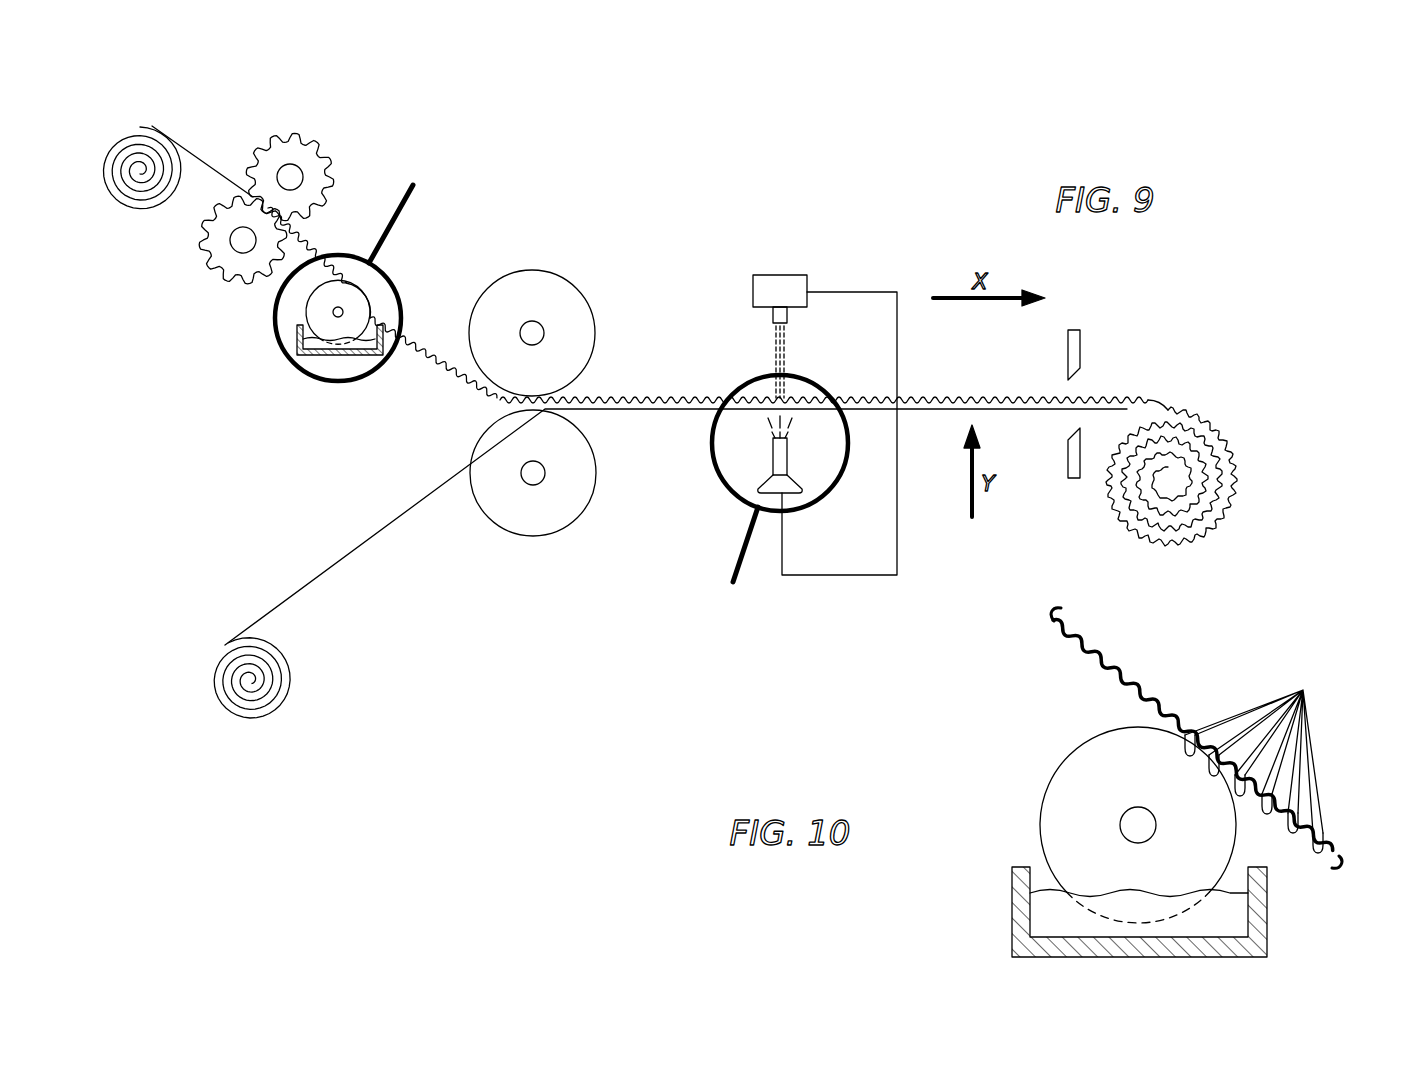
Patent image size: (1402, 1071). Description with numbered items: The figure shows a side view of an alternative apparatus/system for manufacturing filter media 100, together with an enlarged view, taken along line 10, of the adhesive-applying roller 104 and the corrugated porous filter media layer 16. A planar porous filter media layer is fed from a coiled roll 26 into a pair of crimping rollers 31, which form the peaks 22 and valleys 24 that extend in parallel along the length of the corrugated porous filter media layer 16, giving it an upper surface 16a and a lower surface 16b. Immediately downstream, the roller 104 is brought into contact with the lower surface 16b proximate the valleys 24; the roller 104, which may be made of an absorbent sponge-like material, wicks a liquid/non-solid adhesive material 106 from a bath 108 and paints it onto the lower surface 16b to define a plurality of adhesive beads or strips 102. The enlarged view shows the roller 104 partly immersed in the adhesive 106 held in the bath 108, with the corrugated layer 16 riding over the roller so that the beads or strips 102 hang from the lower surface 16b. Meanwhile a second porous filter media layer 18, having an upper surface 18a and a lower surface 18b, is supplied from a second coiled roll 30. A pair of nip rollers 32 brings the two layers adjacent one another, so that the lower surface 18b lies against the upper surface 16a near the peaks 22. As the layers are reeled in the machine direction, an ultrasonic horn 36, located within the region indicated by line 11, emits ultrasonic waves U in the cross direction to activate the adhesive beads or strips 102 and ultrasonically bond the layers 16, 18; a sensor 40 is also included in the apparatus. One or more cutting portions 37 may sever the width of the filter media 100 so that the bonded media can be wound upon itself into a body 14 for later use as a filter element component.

In FIG. 9, the filter media 10 is at (355, 264).
In FIG. 9, the enlargement line for the ultrasonic horn detail 11 is at (773, 495).
In FIG. 9, the body 14 is at (1097, 535).
In FIG. 9, the corrugated porous filter media layer 16 is at (328, 238).
In FIG. 10, the corrugated porous filter media layer 16 is at (1113, 643).
In FIG. 9, the upper surface 16a is at (442, 312).
In FIG. 9, the lower surface 16b is at (463, 388).
In FIG. 10, the lower surface 16b is at (1080, 660).
In FIG. 9, the second porous filter media layer 18 is at (330, 563).
In FIG. 9, the upper surface 18a is at (355, 533).
In FIG. 9, the lower surface 18b is at (378, 518).
In FIG. 9, the peaks 22 is at (413, 320).
In FIG. 9, the valleys 24 is at (447, 350).
In FIG. 9, the coiled roll 26 is at (112, 105).
In FIG. 9, the coiled roll 30 is at (215, 727).
In FIG. 9, the crimping rollers 31 is at (305, 136).
In FIG. 9, the nip rollers 32 is at (553, 270).
In FIG. 9, the ultrasonic horn 36 is at (810, 460).
In FIG. 9, the cutting portions 37 is at (1075, 329).
In FIG. 9, the sensor 40 is at (797, 275).
In FIG. 9, the filter media 100 is at (952, 360).
In FIG. 10, the adhesive beads or strips 102 is at (1265, 758).
In FIG. 9, the roller 104 is at (302, 308).
In FIG. 10, the roller 104 is at (1050, 782).
In FIG. 10, the liquid adhesive material 106 is at (1045, 888).
In FIG. 10, the bath 108 is at (1018, 897).
In FIG. 9, the ultrasonic waves U is at (765, 425).